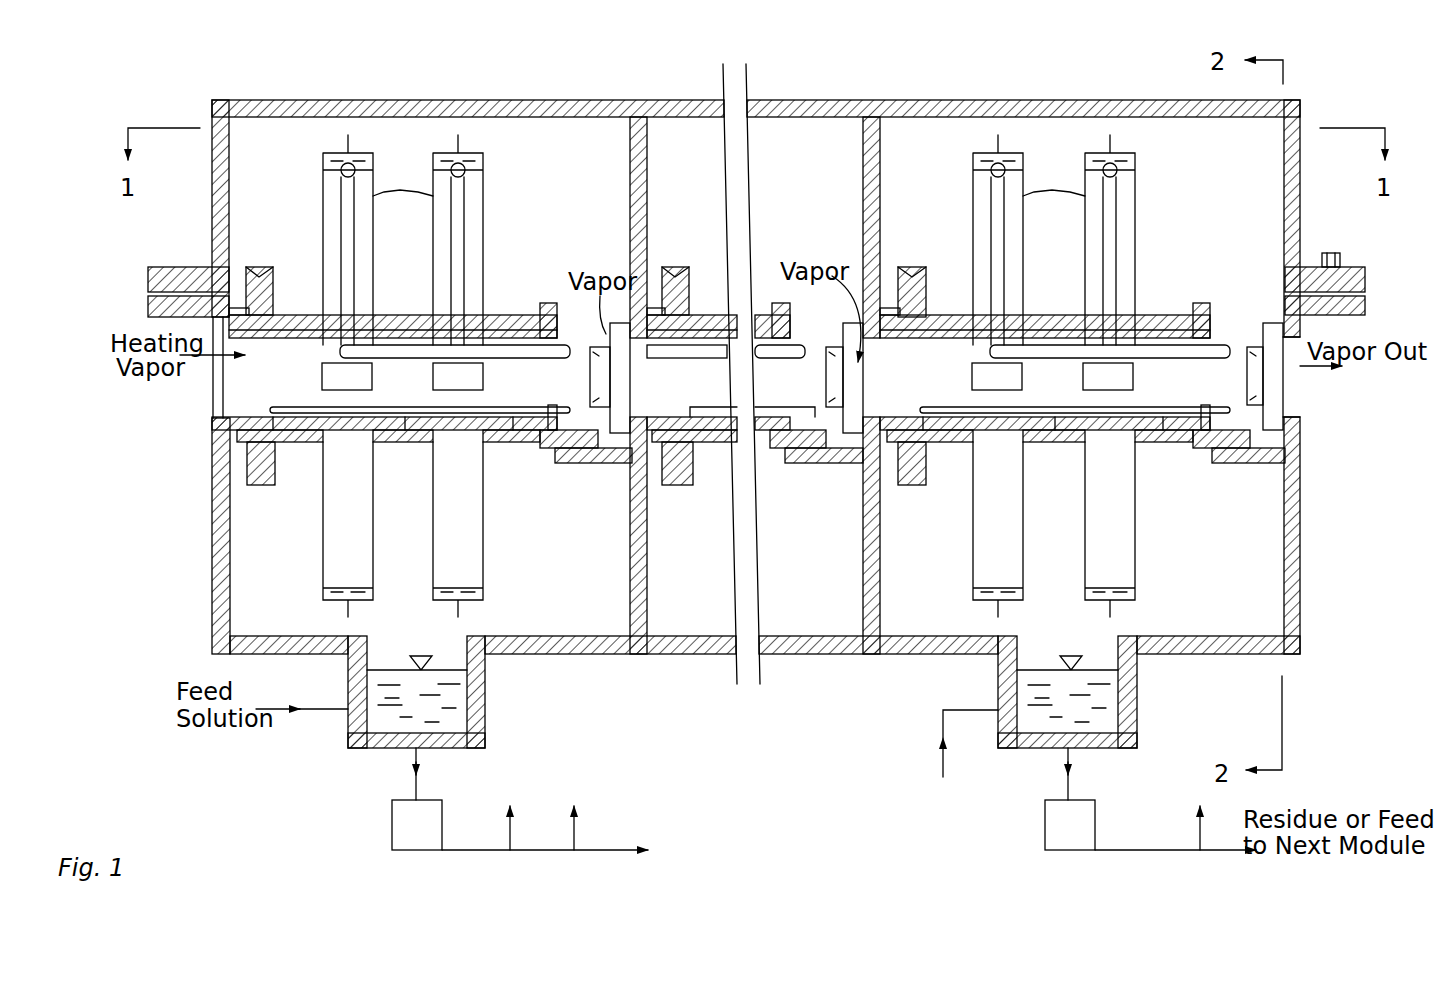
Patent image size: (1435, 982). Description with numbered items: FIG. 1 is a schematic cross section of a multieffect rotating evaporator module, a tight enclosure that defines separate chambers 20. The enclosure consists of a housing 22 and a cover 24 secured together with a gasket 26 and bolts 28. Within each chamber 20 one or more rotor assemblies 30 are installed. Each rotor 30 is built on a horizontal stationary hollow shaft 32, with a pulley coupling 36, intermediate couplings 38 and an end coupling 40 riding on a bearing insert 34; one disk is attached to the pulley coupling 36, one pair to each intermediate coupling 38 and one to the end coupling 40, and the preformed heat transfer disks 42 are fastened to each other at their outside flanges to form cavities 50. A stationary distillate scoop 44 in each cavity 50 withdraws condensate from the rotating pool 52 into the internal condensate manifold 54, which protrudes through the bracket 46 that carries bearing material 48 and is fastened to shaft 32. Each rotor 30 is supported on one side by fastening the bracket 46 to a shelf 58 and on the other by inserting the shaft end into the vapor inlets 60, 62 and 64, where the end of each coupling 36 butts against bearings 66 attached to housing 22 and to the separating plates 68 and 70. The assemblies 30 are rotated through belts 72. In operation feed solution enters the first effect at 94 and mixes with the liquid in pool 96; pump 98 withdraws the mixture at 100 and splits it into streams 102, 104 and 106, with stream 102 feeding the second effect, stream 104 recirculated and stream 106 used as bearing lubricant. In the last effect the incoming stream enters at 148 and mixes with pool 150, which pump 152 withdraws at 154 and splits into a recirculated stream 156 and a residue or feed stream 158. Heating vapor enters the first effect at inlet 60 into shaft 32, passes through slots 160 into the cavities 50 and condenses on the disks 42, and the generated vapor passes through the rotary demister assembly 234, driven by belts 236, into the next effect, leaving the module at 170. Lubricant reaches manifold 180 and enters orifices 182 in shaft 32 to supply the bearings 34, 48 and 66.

The chambers 20 is at (538, 610).
The housing 22 is at (1300, 598).
The cover 24 is at (1300, 176).
The gasket 26 is at (622, 330).
The bolts 28 is at (1342, 254).
The rotor assembly 30 is at (488, 192).
The horizontal stationary hollow shaft 32 is at (222, 426).
The bearing insert 34 is at (288, 442).
The pulley coupling 36 is at (276, 310).
The intermediate couplings 38 is at (392, 314).
The end coupling 40 is at (530, 318).
The preformed heat transfer disks 42 is at (322, 198).
The distillate scoops 44 is at (729, 180).
The bracket 46 is at (558, 463).
The bearing material 48 is at (540, 440).
The cavities 50 is at (338, 558).
The condensate pool 52 is at (445, 588).
The internal condensate manifold 54 is at (500, 360).
The shelf 58 is at (568, 463).
The vapor inlet 60 is at (218, 378).
The vapor inlet 62 is at (645, 368).
The vapor inlet 64 is at (892, 368).
The bearings 66 is at (262, 470).
The separating plate 68 is at (648, 584).
The separating plate 70 is at (881, 588).
The belts 72 is at (258, 267).
The feed solution inlet 94 is at (352, 706).
The pool 96 is at (392, 670).
The pump 98 is at (392, 832).
The pump withdrawal point 100 is at (410, 755).
The stream 102 is at (564, 850).
The stream 104 is at (578, 813).
The stream 106 is at (505, 813).
The last effect inlet 148 is at (998, 708).
The pool 150 is at (1040, 670).
The pump 152 is at (1045, 832).
The pump withdrawal point 154 is at (1075, 752).
The stream 156 is at (1178, 824).
The stream 158 is at (1188, 867).
The slots 160 is at (445, 382).
The vapor outlet 170 is at (1296, 388).
The lubricant manifold 180 is at (352, 408).
The orifices 182 is at (270, 420).
The rotary demister assembly 234 is at (585, 356).
The belts 236 is at (834, 352).